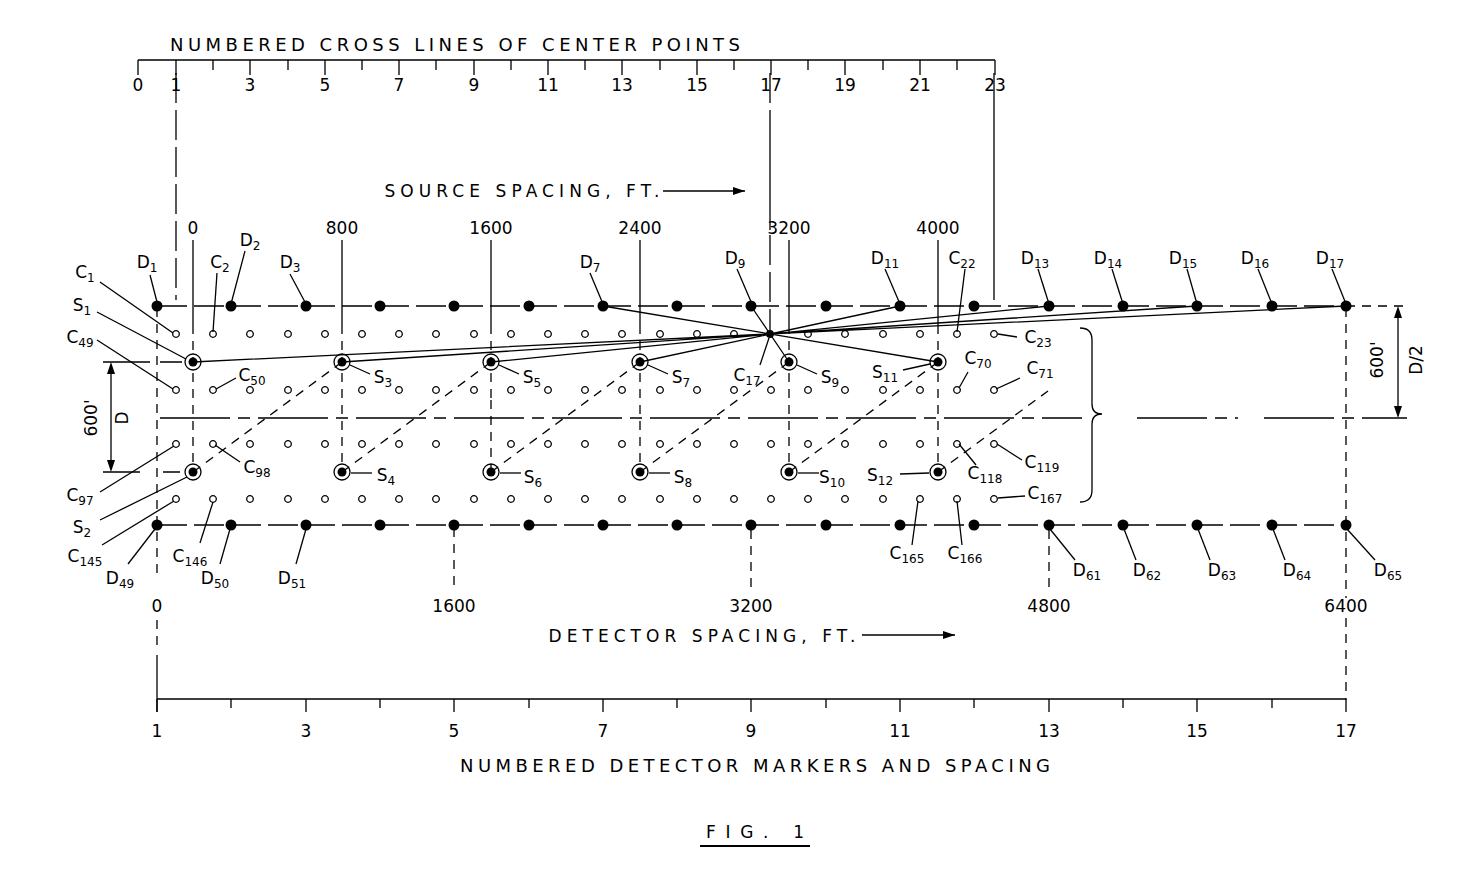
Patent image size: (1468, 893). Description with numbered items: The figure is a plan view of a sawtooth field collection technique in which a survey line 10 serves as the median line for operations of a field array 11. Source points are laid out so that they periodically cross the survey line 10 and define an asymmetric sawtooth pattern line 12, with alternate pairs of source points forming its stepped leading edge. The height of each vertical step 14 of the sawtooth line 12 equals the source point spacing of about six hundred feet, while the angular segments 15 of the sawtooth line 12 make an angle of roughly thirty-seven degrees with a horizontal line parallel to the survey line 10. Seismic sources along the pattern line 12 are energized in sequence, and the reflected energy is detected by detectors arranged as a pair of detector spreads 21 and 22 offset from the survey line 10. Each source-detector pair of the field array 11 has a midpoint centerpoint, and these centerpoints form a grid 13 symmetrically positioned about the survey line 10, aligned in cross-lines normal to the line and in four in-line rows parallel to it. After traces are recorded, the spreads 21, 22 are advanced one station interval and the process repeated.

The survey line 10 is at (1250, 414).
The field array 11 is at (1232, 190).
The asymmetric sawtooth pattern line 12 is at (1044, 404).
The grid of centerpoints 13 is at (1104, 415).
The vertical step 14 is at (493, 400).
The angular segment 15 is at (398, 431).
The detector spread 21 is at (422, 306).
The detector spread 22 is at (420, 528).